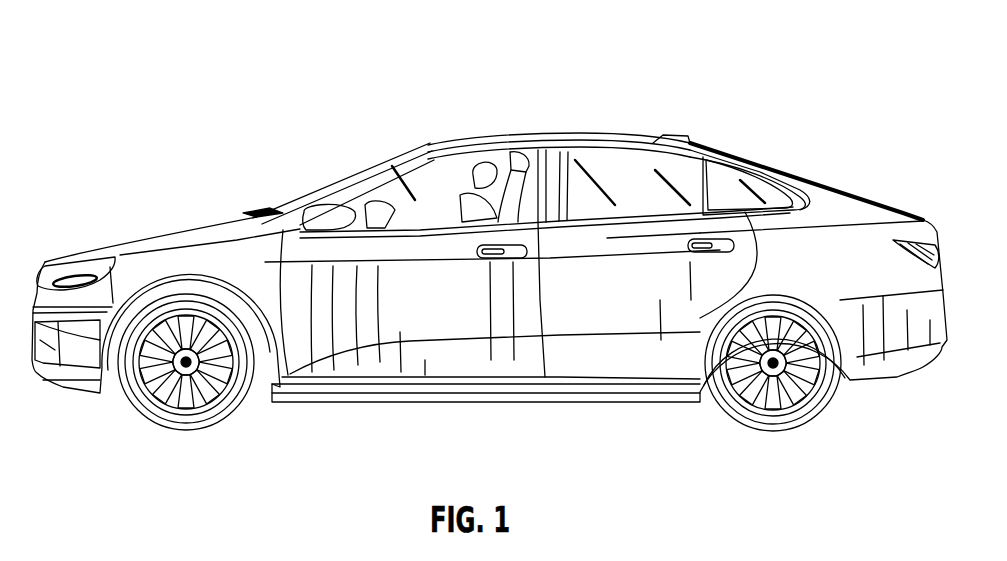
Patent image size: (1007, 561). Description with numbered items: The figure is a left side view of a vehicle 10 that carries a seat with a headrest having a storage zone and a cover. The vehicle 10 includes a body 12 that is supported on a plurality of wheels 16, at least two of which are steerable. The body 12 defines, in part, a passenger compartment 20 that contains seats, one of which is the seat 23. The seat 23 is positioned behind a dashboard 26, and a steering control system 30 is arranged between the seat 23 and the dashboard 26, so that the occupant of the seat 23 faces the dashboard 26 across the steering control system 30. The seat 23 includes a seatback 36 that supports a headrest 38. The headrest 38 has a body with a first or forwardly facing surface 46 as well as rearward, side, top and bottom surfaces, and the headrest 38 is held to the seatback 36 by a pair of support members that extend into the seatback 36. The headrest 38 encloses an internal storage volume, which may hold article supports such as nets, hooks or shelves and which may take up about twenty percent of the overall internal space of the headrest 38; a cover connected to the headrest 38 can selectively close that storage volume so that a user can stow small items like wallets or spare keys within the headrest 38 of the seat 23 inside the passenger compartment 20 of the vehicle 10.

The vehicle 10 is at (277, 151).
The body 12 is at (543, 133).
The wheels 16 is at (208, 421).
The passenger compartment 20 is at (465, 185).
The seat 23 is at (539, 224).
The dashboard 26 is at (377, 202).
The steering control system 30 is at (433, 177).
The seatback 36 is at (497, 218).
The headrest 38 is at (503, 187).
The forwardly facing surface 46 is at (475, 182).